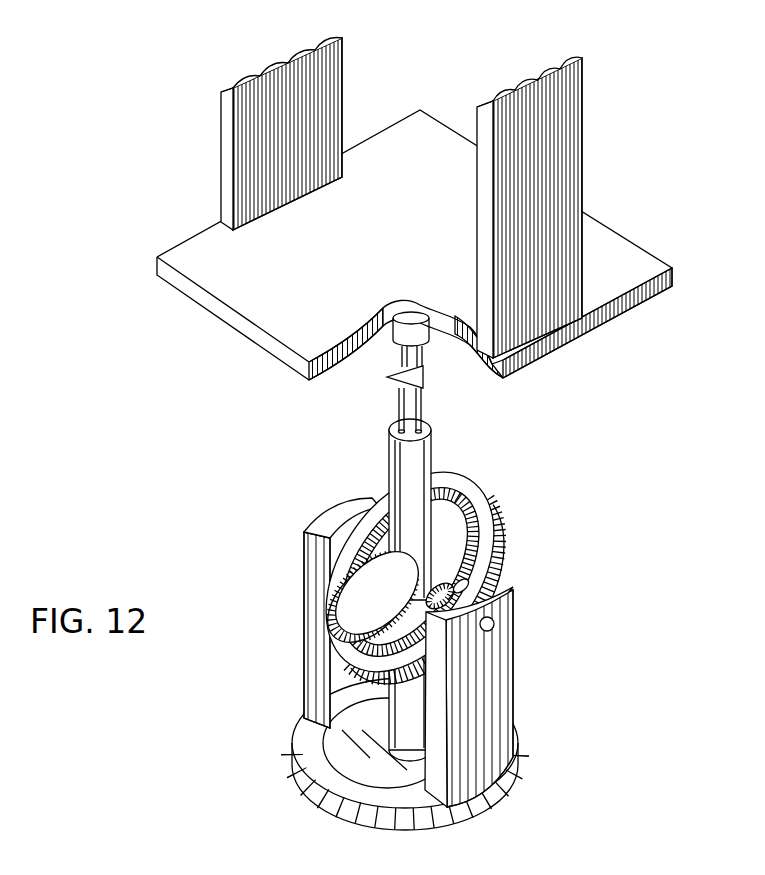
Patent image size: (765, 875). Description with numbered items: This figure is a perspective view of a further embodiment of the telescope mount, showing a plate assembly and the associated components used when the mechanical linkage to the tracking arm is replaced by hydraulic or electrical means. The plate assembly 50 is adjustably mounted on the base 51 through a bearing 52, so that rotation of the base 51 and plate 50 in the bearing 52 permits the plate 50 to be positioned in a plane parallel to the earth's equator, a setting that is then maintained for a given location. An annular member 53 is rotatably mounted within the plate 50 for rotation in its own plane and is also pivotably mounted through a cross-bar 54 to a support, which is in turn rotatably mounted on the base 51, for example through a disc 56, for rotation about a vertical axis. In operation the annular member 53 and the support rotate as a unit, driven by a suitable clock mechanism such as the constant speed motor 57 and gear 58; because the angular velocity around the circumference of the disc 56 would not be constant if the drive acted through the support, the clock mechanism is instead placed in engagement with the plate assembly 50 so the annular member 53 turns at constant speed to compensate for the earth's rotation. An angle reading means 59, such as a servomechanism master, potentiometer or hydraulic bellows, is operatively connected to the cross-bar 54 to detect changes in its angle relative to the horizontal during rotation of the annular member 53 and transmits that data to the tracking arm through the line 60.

The plate assembly 50 is at (338, 648).
The base 51 is at (525, 697).
The bearing 52 is at (494, 622).
The annular member 53 is at (337, 618).
The cross-bar 54 is at (432, 590).
The disc 56 is at (347, 750).
The constant speed motor 57 is at (466, 584).
The gear 58 is at (452, 588).
The angle reading means 59 is at (373, 590).
The line 60 is at (387, 376).